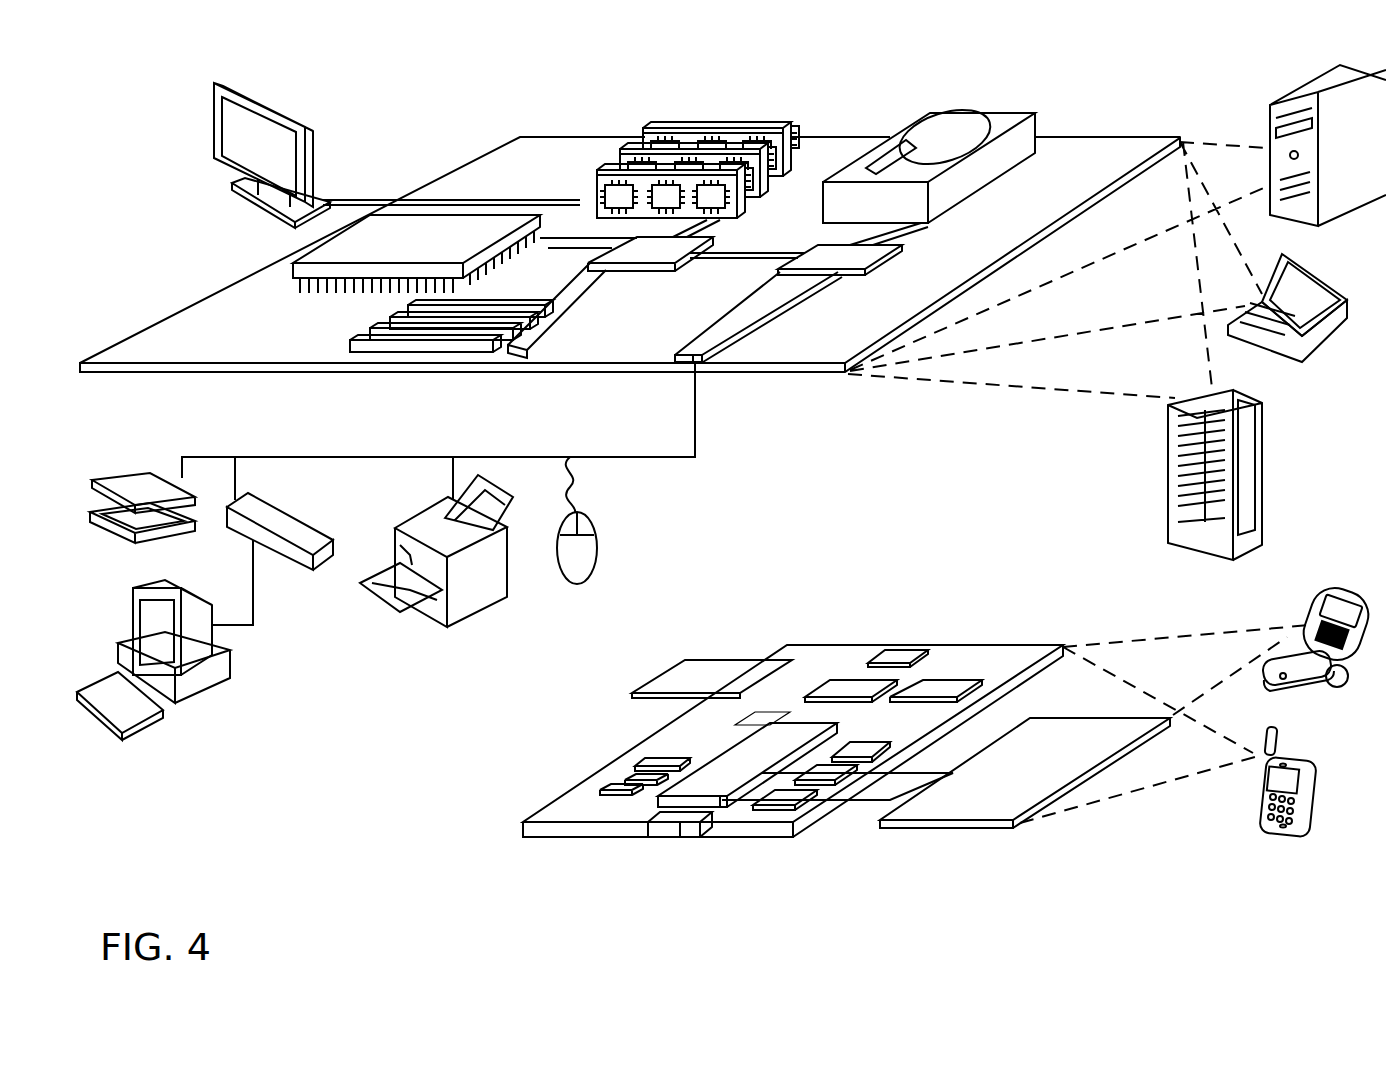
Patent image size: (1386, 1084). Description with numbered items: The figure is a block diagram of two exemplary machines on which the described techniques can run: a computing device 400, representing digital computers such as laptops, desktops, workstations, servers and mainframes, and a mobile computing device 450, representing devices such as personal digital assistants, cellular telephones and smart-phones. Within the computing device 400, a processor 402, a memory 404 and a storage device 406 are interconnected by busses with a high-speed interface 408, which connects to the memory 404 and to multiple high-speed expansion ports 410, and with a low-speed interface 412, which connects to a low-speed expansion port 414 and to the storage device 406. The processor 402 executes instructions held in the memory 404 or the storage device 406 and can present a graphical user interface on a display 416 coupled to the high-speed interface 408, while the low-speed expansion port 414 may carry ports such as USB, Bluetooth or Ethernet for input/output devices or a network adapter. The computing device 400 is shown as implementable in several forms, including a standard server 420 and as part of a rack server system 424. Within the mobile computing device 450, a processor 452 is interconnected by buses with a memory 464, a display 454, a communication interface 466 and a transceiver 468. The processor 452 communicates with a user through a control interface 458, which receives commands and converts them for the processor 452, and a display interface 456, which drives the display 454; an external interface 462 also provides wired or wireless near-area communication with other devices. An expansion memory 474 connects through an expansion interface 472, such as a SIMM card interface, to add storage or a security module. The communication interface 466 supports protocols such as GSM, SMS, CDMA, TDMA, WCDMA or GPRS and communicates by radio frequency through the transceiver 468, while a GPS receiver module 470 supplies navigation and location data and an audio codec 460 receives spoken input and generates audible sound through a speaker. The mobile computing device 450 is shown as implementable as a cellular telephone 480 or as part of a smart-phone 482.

The computing device 400 is at (438, 103).
The processor 402 is at (292, 265).
The memory 404 is at (652, 143).
The storage device 406 is at (930, 118).
The high-speed interface 408 is at (620, 248).
The high-speed expansion ports 410 is at (352, 338).
The low-speed interface 412 is at (818, 254).
The low-speed expansion port 414 is at (705, 363).
The display 416 is at (218, 82).
The standard server 420 is at (1270, 120).
The rack server system 424 is at (1169, 501).
The mobile computing device 450 is at (491, 840).
The processor 452 is at (717, 790).
The display 454 is at (980, 808).
The display interface 456 is at (795, 802).
The control interface 458 is at (840, 772).
The audio codec 460 is at (858, 750).
The external interface 462 is at (682, 827).
The memory 464 is at (620, 777).
The communication interface 466 is at (850, 686).
The transceiver 468 is at (938, 688).
The GPS receiver module 470 is at (910, 650).
The expansion interface 472 is at (745, 723).
The expansion memory 474 is at (700, 662).
The cellular telephone 480 is at (1322, 593).
The smart-phone 482 is at (1262, 800).